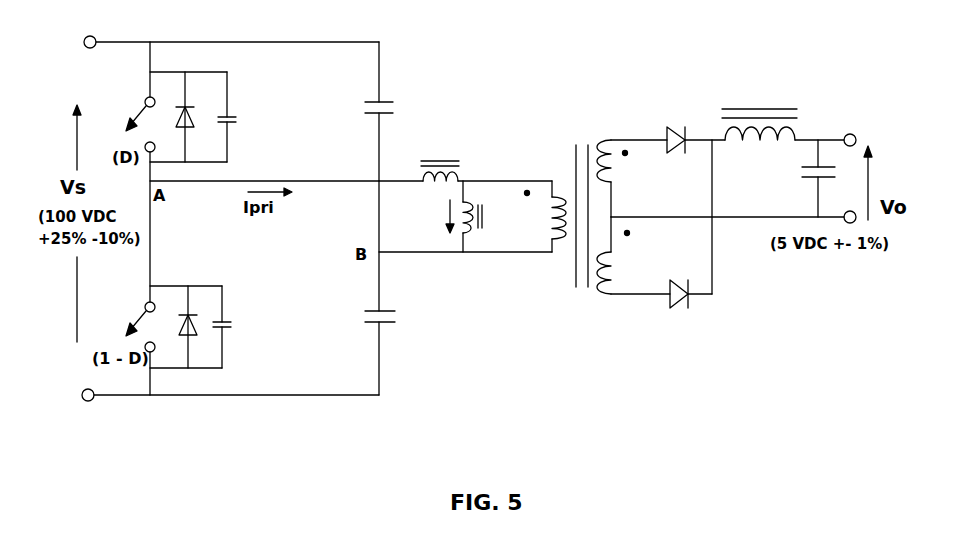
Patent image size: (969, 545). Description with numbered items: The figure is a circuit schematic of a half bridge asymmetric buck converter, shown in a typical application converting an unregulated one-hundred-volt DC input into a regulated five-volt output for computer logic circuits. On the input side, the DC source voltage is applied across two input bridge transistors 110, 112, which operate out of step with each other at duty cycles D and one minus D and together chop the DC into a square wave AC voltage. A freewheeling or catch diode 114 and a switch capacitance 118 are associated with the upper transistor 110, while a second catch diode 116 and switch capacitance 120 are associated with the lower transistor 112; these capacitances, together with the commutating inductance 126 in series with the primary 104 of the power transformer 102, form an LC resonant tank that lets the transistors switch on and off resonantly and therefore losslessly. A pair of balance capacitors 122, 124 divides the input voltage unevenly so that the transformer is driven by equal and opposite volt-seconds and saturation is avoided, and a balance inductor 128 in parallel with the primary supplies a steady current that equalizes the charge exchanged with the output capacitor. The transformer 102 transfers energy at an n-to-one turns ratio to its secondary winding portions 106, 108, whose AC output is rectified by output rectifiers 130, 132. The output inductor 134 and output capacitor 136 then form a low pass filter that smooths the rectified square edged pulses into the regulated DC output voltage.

The power transformer 102 is at (580, 207).
The primary winding 104 is at (543, 205).
The upper secondary winding 106 is at (636, 178).
The lower secondary winding 108 is at (636, 255).
The input bridge transistor 110 is at (127, 111).
The input bridge transistor 112 is at (127, 314).
The freewheeling or catch diode 114 is at (190, 109).
The freewheeling or catch diode 116 is at (192, 317).
The switch capacitance 118 is at (247, 117).
The switch capacitance 120 is at (244, 327).
The balance capacitor 122 is at (356, 111).
The balance capacitor 124 is at (358, 288).
The commutating inductance 126 is at (486, 147).
The balance inductor 128 is at (473, 216).
The output rectifier 130 is at (690, 114).
The output rectifier 132 is at (684, 322).
The output inductor 134 is at (783, 99).
The output capacitor 136 is at (795, 178).